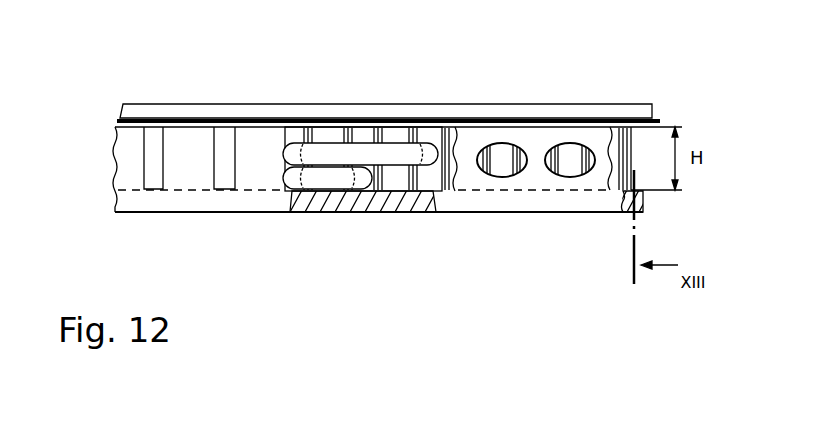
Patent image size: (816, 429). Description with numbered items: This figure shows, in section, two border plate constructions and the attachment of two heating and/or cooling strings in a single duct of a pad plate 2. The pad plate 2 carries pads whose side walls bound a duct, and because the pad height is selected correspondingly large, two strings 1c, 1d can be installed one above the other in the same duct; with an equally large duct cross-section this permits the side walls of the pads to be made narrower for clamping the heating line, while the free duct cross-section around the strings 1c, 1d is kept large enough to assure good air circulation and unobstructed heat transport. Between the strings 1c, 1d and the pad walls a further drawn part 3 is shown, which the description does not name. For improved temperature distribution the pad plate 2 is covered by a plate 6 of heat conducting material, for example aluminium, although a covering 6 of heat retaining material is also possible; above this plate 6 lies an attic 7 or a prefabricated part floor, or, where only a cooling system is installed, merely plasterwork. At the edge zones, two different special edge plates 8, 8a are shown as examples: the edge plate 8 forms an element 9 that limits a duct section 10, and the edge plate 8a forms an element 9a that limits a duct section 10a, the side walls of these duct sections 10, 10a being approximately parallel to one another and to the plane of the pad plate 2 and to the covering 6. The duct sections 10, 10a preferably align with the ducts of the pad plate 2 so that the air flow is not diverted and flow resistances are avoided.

The heating and/or cooling string 1c is at (328, 189).
The heating and/or cooling string 1d is at (363, 143).
The pad plate 2 is at (396, 205).
The ring holder 3 is at (398, 130).
The plate of heat conducting material 6 is at (610, 127).
The attic 7 is at (590, 104).
The edge plate 8 is at (187, 212).
The edge plate 8a is at (537, 212).
The form element 9 is at (256, 168).
The form element 9a is at (600, 168).
The duct section 10 is at (218, 131).
The duct section 10a is at (565, 143).